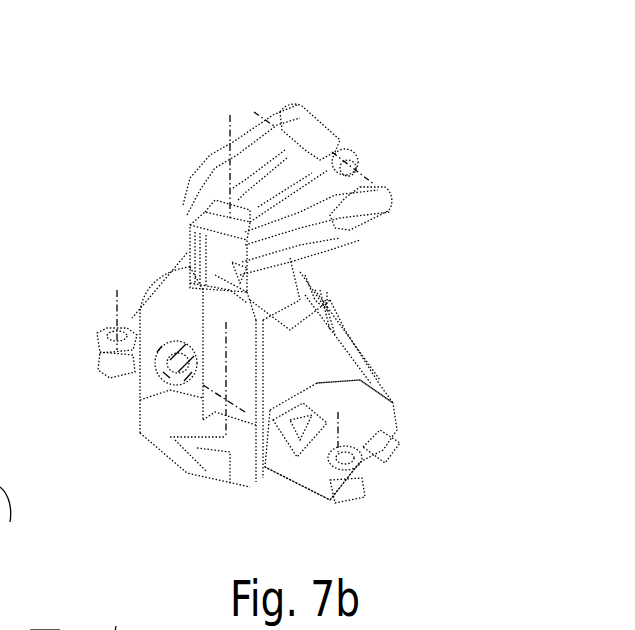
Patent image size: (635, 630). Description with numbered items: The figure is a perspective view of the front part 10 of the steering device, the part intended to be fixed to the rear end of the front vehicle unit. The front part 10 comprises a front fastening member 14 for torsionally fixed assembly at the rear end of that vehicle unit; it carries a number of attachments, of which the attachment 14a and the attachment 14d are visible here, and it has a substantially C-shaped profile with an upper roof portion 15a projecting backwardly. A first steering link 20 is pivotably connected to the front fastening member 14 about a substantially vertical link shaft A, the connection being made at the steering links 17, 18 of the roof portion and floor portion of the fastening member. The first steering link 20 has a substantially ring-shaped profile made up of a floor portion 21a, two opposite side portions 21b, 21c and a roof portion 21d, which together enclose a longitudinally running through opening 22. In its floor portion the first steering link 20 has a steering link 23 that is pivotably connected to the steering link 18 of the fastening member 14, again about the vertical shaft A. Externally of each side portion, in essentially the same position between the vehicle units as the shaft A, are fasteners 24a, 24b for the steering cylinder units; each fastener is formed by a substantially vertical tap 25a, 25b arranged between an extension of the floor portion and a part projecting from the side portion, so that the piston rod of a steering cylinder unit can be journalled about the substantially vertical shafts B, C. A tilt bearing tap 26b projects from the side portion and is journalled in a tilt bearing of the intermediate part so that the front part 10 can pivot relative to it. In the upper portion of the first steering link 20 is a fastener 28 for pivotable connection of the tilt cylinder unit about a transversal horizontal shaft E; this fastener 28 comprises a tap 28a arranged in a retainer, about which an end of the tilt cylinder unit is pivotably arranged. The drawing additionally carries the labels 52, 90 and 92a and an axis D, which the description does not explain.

The front part 10 is at (358, 99).
The front fastening member 14 is at (376, 386).
The attachment 14a is at (388, 196).
The attachment 14d is at (250, 393).
The upper roof portion 15a is at (305, 222).
The steering link 17 is at (231, 229).
The steering link 18 is at (197, 462).
The first steering link 20 is at (289, 332).
The floor portion 21a is at (249, 447).
The side portion 21b is at (140, 327).
The side portion 21c is at (300, 385).
The roof portion 21d is at (187, 267).
The longitudinal through opening 22 is at (217, 324).
The steering link 23 is at (213, 441).
The fastener 24a is at (324, 504).
The fastener 24b is at (97, 353).
The tap 25a is at (340, 487).
The tap 25b is at (112, 369).
The tilt bearing tap 26b is at (172, 375).
The fastener 28 is at (349, 145).
The tap 28a is at (309, 142).
The adjacent figure element 52 is at (11, 520).
The adjacent figure element 90 is at (45, 621).
The adjacent figure element 92a is at (115, 629).
The link shaft A is at (230, 140).
The vertical shaft B is at (337, 445).
The vertical shaft C is at (115, 310).
The axis D is at (197, 382).
The transversal horizontal shaft E is at (253, 113).